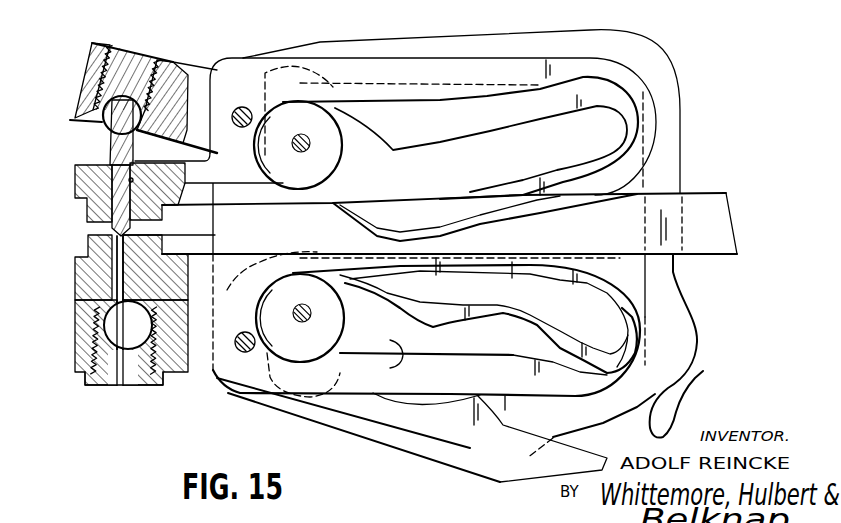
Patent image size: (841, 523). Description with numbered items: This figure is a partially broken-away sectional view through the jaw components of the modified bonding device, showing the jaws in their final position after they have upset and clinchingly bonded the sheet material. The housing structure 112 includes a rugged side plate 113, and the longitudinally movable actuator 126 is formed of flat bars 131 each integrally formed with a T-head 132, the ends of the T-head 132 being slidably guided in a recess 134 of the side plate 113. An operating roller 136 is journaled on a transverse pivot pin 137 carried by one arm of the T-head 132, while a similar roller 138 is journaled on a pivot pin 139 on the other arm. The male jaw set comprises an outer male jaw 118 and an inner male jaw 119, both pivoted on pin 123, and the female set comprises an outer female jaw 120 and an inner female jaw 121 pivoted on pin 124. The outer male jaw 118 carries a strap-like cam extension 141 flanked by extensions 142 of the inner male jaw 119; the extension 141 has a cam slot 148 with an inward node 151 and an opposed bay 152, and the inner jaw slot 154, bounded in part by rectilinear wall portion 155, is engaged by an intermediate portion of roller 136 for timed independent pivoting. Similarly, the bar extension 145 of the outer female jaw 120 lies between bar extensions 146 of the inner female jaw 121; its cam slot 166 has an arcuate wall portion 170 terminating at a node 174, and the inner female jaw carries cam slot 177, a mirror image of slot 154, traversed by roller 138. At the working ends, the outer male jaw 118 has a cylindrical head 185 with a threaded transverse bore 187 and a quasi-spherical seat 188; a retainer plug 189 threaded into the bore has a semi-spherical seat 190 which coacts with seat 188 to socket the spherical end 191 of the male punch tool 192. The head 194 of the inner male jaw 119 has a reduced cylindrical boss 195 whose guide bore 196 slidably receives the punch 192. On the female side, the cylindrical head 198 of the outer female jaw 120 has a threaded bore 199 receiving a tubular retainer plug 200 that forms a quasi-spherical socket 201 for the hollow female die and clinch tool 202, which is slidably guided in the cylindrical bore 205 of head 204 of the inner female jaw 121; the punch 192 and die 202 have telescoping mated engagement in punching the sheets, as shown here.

The housing structure 112 is at (672, 63).
The side plate 113 is at (673, 138).
The outer male jaw 118 is at (70, 120).
The inner male jaw 119 is at (83, 213).
The outer female jaw 120 is at (93, 380).
The inner female jaw 121 is at (80, 295).
The transverse pivot pin 123 is at (253, 118).
The transverse pivot pin 124 is at (227, 378).
The actuator 126 is at (715, 192).
The flat bar 131 is at (724, 225).
The T-head 132 is at (280, 382).
The recess 134 is at (525, 66).
The operating roller 136 is at (341, 153).
The transverse pivot pin 137 is at (308, 146).
The roller 138 is at (342, 322).
The transverse pivot pin 139 is at (307, 314).
The cam extension 141 is at (210, 107).
The extension 142 is at (383, 69).
The bar extension 145 is at (207, 373).
The bar extension 146 is at (220, 271).
The cam slot 148 is at (497, 135).
The node 151 is at (403, 140).
The bay 152 is at (378, 231).
The slot 154 is at (458, 103).
The rectilinear wall portion 155 is at (402, 103).
The cam slot 166 is at (398, 357).
The wall portion 170 is at (407, 403).
The node 174 is at (487, 408).
The cam slot 177 is at (507, 337).
The cylindrical head 185 is at (87, 71).
The threaded transverse bore 187 is at (163, 78).
The quasi-spherical seat 188 is at (104, 130).
The retainer plug 189 is at (143, 53).
The semi-spherical seat 190 is at (126, 62).
The spherical end 191 is at (205, 107).
The male pierce or punch tool 192 is at (87, 180).
The head 194 is at (80, 210).
The reduced cylindrical boss 195 is at (157, 226).
The cylindrical guide bore 196 is at (134, 180).
The cylindrical head 198 is at (83, 333).
The threaded bore 199 is at (155, 370).
The tubular retainer plug 200 is at (103, 386).
The quasi-spherical socket 201 is at (77, 360).
The hollow female die and clinch tool 202 is at (110, 258).
The head 204 is at (77, 282).
The cylindrical bore 205 is at (128, 274).